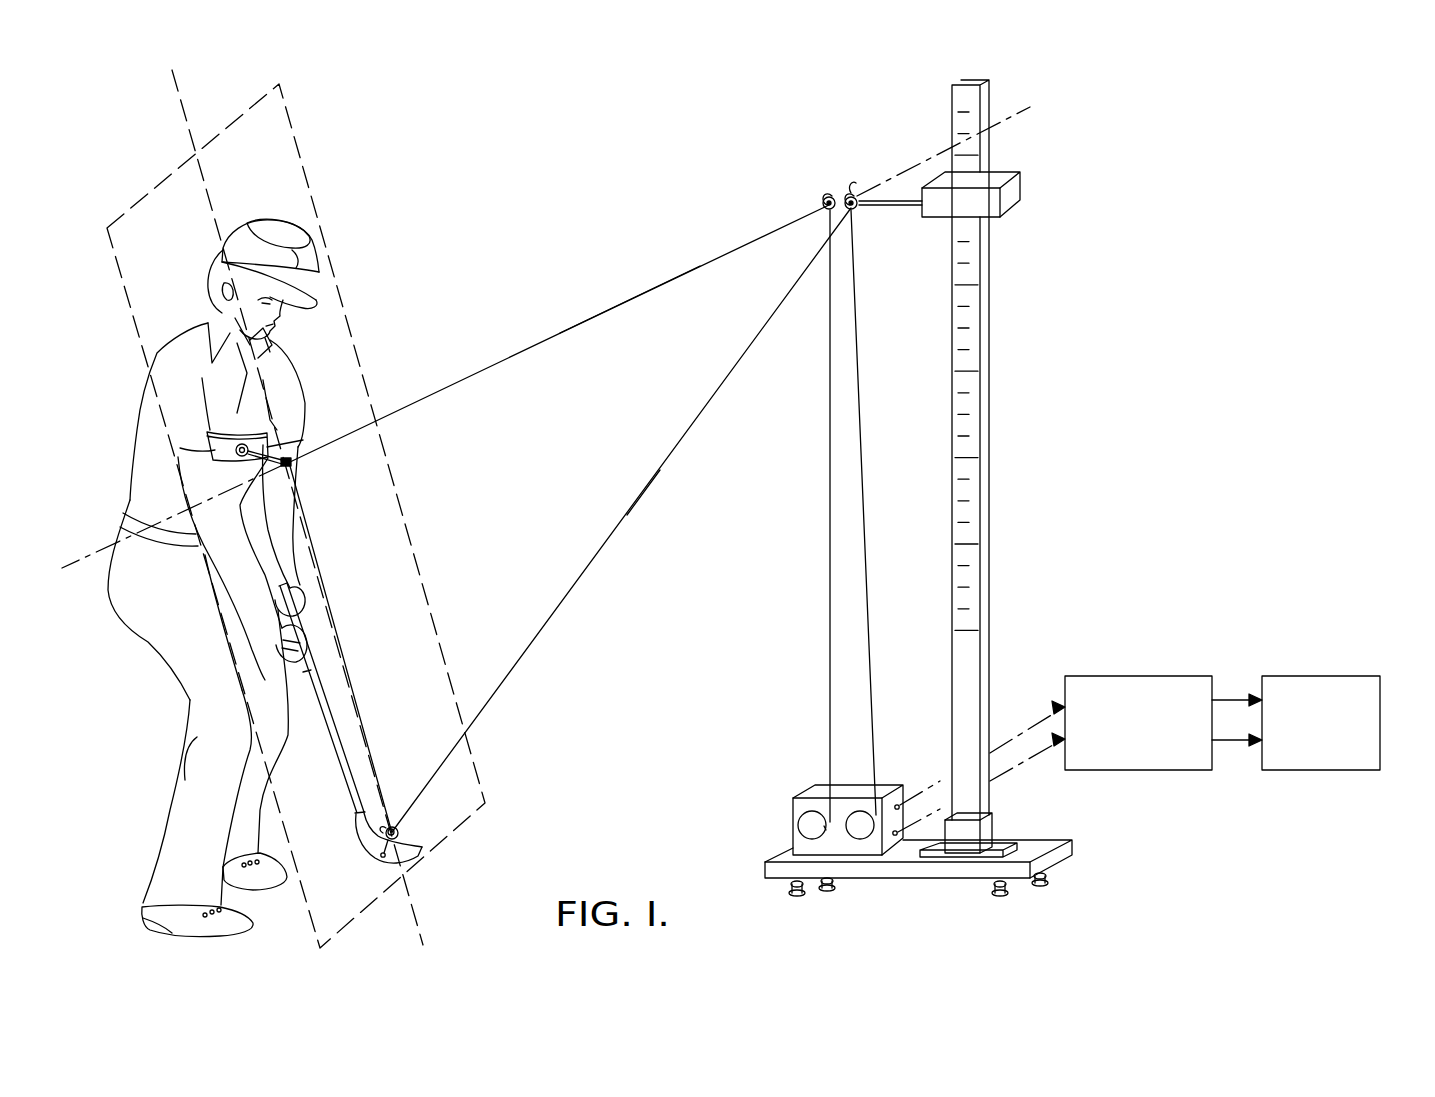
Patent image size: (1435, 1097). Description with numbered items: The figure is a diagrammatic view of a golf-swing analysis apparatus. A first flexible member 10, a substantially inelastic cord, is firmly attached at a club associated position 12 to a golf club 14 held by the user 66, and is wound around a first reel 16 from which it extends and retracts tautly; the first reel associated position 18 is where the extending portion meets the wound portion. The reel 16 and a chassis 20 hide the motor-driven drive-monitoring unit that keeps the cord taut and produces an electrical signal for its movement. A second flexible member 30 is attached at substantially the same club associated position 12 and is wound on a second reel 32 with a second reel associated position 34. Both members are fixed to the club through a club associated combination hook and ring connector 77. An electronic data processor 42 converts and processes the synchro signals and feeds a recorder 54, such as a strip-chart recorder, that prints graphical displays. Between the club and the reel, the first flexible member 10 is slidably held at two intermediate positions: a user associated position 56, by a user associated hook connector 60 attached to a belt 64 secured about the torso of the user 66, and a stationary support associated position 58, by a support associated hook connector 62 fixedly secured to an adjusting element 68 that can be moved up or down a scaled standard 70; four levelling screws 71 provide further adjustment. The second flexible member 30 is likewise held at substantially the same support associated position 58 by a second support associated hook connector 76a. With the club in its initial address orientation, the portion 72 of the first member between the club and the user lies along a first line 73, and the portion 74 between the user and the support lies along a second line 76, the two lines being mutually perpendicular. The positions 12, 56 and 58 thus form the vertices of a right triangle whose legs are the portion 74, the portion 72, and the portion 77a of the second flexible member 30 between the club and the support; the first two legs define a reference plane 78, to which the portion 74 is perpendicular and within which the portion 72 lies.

The first flexible member 10 is at (586, 318).
The club associated position 12 is at (394, 828).
The golf club 14 is at (355, 792).
The first reel 16 is at (797, 823).
The first reel associated position 18 is at (826, 830).
The chassis 20 is at (793, 796).
The second flexible member 30 is at (620, 519).
The second reel 32 is at (855, 808).
The second reel associated position 34 is at (884, 812).
The electronic data processor 42 is at (1140, 676).
The recorder 54 is at (1308, 676).
The user associated position 56 is at (295, 463).
The support associated position 58 is at (827, 212).
The user associated hook connector 60 is at (250, 448).
The support associated hook connector 62 is at (826, 199).
The belt 64 is at (216, 426).
The user 66 is at (163, 352).
The adjusting element 68 is at (1022, 193).
The standard 70 is at (989, 380).
The levelling screws 71 is at (826, 893).
The portion of the first flexible member between club associated position and user a 72 is at (342, 646).
The first line 73 is at (185, 118).
The portion of the first flexible member between user associated position and suppor 74 is at (645, 297).
The second line 76 is at (92, 537).
The second support associated hook connector 76a is at (851, 193).
The club associated combination hook and ring connector 77 is at (382, 856).
The portion of the second flexible member between club associated position and suppo 77a is at (630, 520).
The reference plane 78 is at (318, 166).